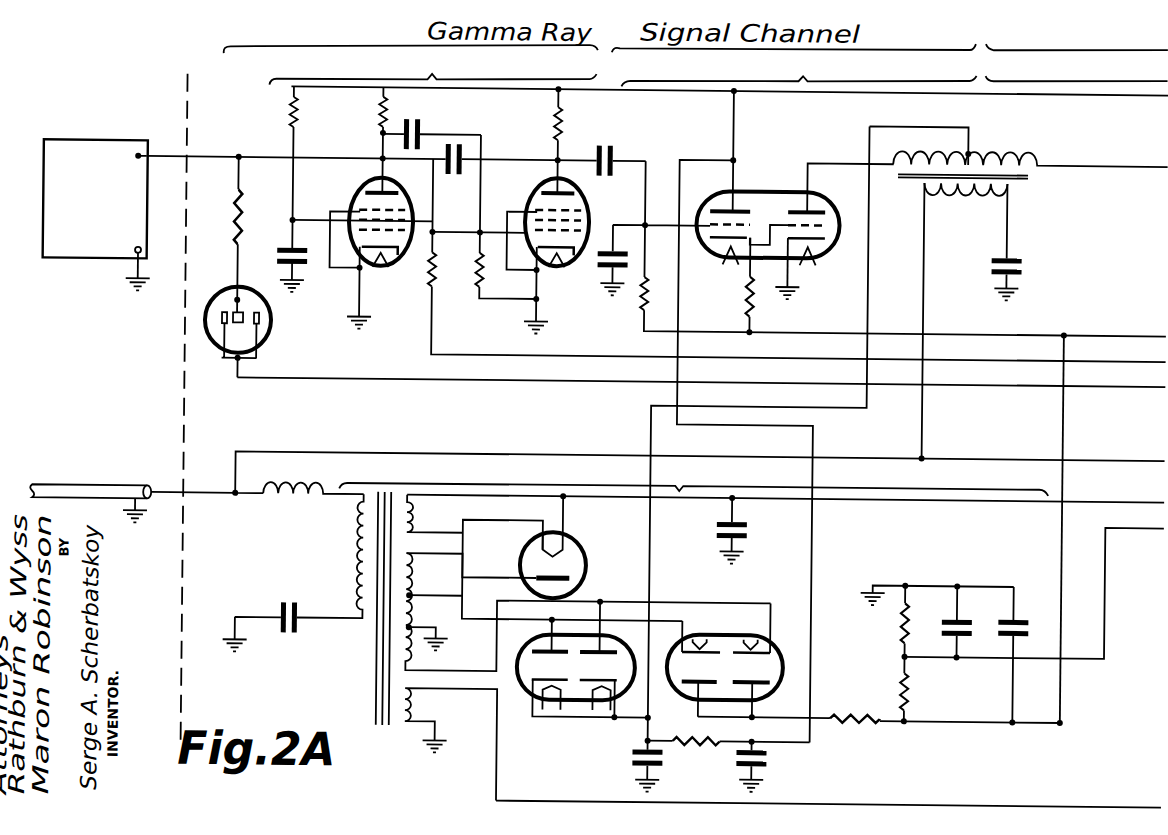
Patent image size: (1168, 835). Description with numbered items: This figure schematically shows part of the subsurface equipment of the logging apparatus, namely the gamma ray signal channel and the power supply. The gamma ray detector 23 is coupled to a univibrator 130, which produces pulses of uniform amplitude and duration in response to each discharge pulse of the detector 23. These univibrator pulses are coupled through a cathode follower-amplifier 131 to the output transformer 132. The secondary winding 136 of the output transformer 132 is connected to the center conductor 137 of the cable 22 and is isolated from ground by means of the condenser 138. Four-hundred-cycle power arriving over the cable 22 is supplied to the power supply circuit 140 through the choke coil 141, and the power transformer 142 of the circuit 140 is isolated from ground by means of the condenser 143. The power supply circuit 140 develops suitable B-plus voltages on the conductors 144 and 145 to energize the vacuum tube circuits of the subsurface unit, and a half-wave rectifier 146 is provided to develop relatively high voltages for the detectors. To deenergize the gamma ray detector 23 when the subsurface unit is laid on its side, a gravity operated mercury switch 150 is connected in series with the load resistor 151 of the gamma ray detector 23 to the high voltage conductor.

The cable 22 is at (104, 489).
The gamma ray detector 23 is at (78, 258).
The univibrator 130 is at (722, 205).
The cathode follower-amplifier 131 is at (880, 398).
The output transformer 132 is at (1033, 175).
The secondary winding 136 is at (968, 190).
The center conductor 137 is at (219, 500).
The condenser 138 is at (1028, 262).
The power supply circuit 140 is at (1098, 385).
The choke coil 141 is at (297, 504).
The power transformer 142 is at (357, 565).
The condenser 143 is at (302, 629).
The conductor 144 is at (654, 581).
The conductor 145 is at (816, 558).
The half-wave rectifier 146 is at (578, 542).
The gravity operated mercury switch 150 is at (271, 336).
The load resistor 151 is at (228, 234).